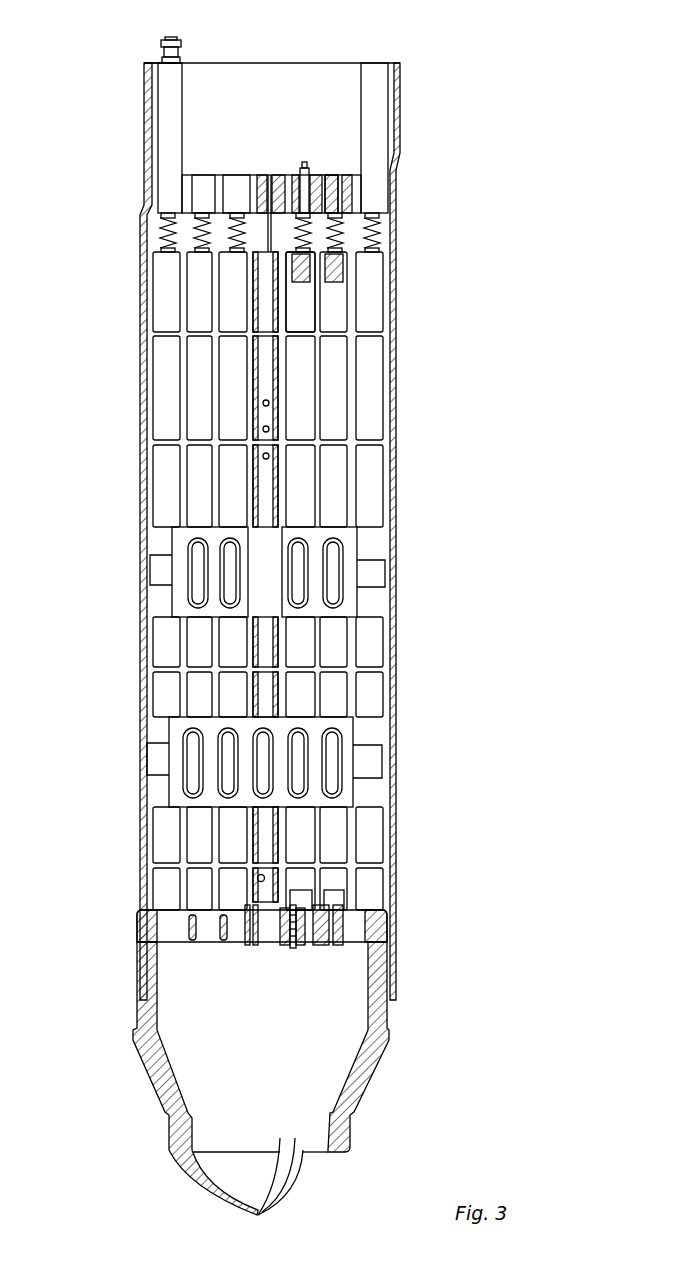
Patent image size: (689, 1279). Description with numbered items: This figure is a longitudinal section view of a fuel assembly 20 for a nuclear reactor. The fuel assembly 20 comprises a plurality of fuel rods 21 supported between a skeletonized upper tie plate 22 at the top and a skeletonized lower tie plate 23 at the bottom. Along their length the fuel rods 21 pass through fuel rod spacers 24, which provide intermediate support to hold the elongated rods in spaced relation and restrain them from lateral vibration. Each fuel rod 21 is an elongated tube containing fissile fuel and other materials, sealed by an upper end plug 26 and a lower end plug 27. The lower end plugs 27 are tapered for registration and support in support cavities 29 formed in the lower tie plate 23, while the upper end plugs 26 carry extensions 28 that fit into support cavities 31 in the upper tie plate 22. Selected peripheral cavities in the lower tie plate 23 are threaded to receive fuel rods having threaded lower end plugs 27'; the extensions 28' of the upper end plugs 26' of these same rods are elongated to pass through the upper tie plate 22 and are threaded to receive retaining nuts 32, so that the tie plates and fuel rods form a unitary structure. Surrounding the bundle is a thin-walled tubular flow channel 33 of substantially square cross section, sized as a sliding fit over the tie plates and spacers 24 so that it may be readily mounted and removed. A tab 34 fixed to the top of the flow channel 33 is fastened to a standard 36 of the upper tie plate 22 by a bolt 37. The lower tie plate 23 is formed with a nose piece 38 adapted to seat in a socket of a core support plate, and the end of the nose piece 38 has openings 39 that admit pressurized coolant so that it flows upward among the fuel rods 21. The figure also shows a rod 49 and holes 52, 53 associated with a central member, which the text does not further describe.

The fuel assembly 20 is at (352, 116).
The fuel rod 21 is at (383, 390).
The upper tie plate 22 is at (157, 211).
The lower tie plate 23 is at (160, 932).
The fuel rod spacer 24 is at (360, 598).
The upper end plug 26 is at (362, 292).
The upper end plug 26' is at (370, 281).
The lower end plug 27 is at (347, 901).
The threaded lower end plug 27' is at (375, 971).
The extension 28 is at (367, 232).
The extension 28' is at (384, 197).
The support cavity 29 is at (450, 968).
The support cavity 31 is at (335, 180).
The retaining nut 32 is at (307, 168).
The flow channel 33 is at (398, 515).
The tab 34 is at (153, 63).
The standard 36 is at (157, 150).
The bolt 37 is at (185, 57).
The nose piece 38 is at (372, 1077).
The opening 39 is at (222, 1172).
The rod 49 is at (269, 185).
The hole 52 is at (258, 877).
The holes 53 is at (262, 404).